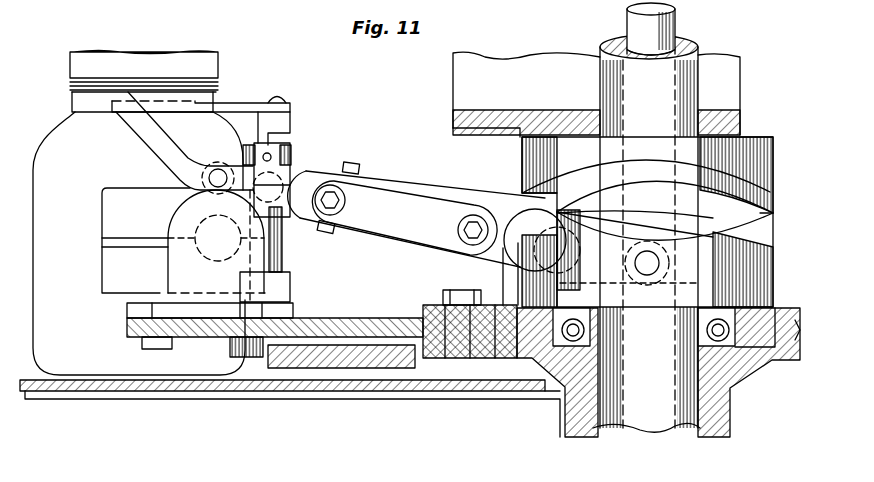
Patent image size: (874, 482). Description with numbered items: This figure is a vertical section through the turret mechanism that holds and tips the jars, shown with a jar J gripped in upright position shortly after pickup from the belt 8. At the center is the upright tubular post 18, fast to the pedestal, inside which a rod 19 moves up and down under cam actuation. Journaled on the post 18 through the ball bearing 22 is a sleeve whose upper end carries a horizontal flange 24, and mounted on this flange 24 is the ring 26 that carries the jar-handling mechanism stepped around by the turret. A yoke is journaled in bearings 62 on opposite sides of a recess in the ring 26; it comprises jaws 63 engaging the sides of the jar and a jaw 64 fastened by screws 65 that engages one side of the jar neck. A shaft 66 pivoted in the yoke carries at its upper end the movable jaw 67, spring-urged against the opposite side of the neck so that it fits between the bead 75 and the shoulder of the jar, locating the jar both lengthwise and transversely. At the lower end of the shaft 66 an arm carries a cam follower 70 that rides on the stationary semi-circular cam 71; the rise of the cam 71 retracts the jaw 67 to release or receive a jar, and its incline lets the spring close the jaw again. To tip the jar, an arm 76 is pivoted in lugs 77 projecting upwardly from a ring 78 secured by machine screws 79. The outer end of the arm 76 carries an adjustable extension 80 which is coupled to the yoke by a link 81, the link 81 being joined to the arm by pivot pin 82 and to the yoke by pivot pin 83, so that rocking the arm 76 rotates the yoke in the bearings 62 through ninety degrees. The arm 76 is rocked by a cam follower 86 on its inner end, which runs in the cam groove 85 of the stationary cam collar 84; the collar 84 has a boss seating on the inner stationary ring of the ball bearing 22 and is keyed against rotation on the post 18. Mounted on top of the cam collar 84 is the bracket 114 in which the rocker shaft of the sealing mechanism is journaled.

The jar J is at (47, 301).
The bead 75 is at (70, 88).
The movable jaw 67 is at (72, 104).
The jaw 64 is at (240, 104).
The screws 65 is at (283, 96).
The link 81 is at (293, 140).
The pivot pin 82 is at (292, 160).
The pivot pin 83 is at (218, 168).
The jaws 63 is at (104, 194).
The bearings 62 is at (190, 213).
The shaft 66 is at (283, 251).
The ring 26 is at (127, 327).
The cam follower 70 is at (230, 349).
The semi-circular cam 71 is at (378, 346).
The ring 78 is at (423, 306).
The machine screws 79 is at (443, 291).
The lugs 77 is at (510, 286).
The arm 76 is at (420, 185).
The adjustable extension 80 is at (404, 218).
The belt 8 is at (468, 380).
The horizontal flange 24 is at (483, 352).
The ball bearing 22 is at (722, 346).
The bracket 114 is at (748, 74).
The cam follower 86 is at (638, 222).
The cam groove 85 is at (762, 210).
The cam collar 84 is at (773, 270).
The upright tubular post 18 is at (700, 52).
The rod 19 is at (680, 26).